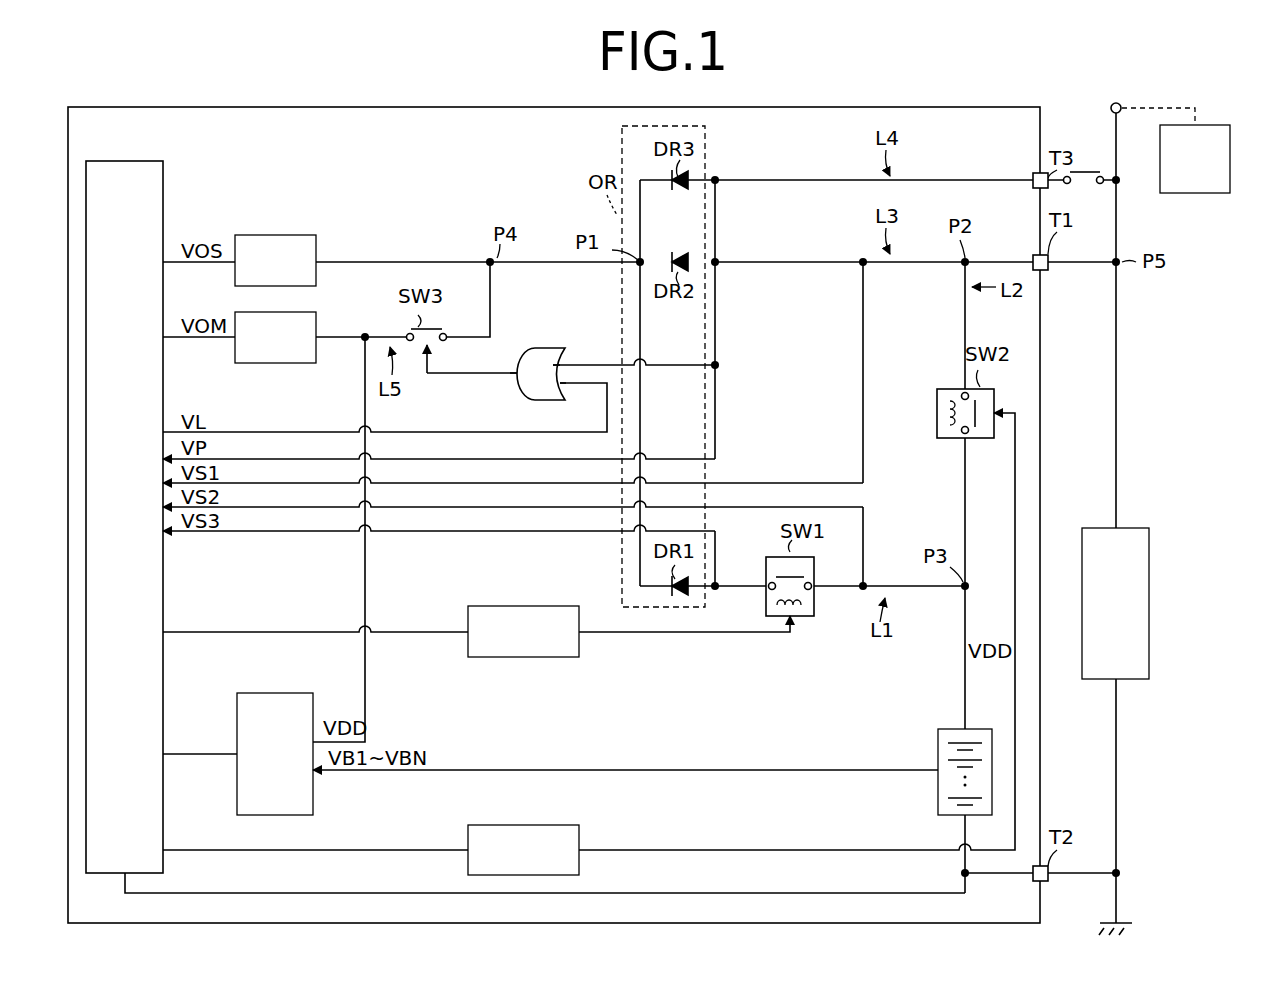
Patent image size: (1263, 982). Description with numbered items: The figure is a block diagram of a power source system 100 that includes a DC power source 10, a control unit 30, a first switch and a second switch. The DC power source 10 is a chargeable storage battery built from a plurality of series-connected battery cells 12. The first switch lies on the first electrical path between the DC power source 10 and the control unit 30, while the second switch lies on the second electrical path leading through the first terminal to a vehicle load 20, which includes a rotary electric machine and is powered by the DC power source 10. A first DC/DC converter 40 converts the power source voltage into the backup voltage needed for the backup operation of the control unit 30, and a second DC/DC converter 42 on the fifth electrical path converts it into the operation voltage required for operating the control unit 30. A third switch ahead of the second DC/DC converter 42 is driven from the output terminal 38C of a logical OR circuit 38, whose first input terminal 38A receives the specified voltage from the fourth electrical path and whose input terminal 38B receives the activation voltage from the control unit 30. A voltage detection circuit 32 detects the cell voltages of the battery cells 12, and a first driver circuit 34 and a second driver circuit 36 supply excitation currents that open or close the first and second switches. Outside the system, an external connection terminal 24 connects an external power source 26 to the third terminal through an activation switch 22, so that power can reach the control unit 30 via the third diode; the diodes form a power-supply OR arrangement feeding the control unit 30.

The power source system 100 is at (985, 107).
The control unit 30 is at (140, 161).
The first DC/DC converter 40 is at (316, 245).
The second DC/DC converter 42 is at (316, 322).
The logical OR circuit 38 is at (540, 347).
The first input terminal 38A is at (562, 366).
The input terminal 38B is at (562, 386).
The output terminal 38C is at (516, 378).
The first driver circuit 34 is at (560, 606).
The second driver circuit 36 is at (560, 825).
The voltage detection circuit 32 is at (290, 693).
The DC power source 10 is at (961, 750).
The battery cell 12 is at (958, 743).
The vehicle load 20 is at (1122, 528).
The activation switch 22 is at (1085, 171).
The external connection terminal 24 is at (1121, 104).
The external power source 26 is at (1205, 125).